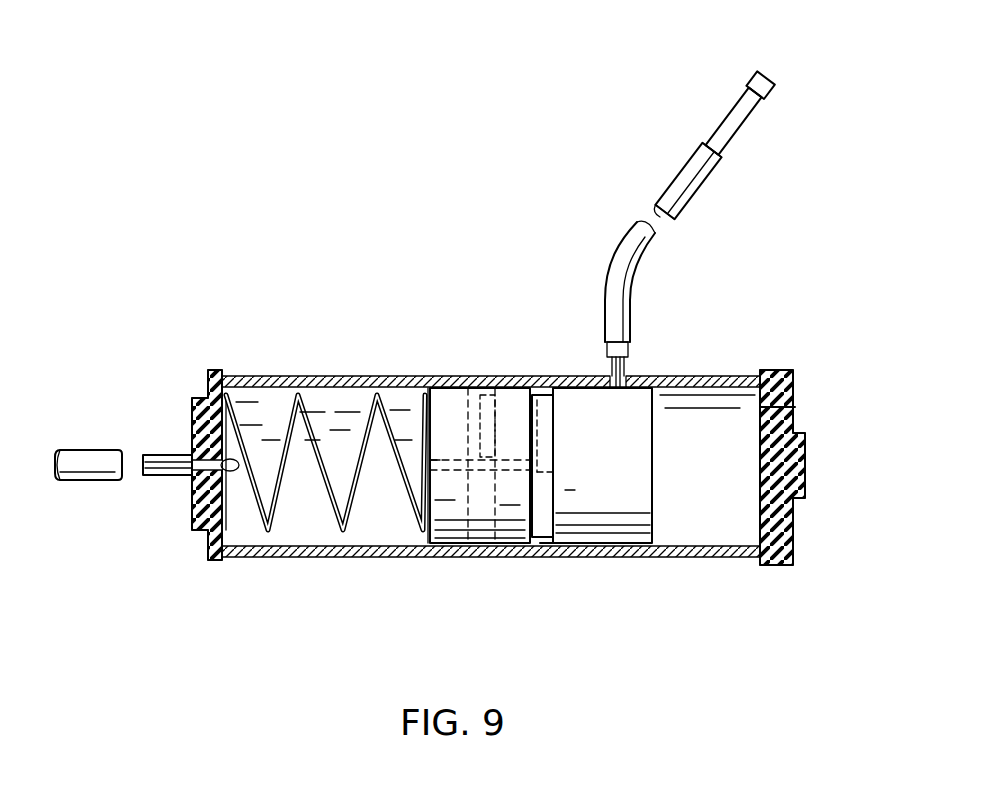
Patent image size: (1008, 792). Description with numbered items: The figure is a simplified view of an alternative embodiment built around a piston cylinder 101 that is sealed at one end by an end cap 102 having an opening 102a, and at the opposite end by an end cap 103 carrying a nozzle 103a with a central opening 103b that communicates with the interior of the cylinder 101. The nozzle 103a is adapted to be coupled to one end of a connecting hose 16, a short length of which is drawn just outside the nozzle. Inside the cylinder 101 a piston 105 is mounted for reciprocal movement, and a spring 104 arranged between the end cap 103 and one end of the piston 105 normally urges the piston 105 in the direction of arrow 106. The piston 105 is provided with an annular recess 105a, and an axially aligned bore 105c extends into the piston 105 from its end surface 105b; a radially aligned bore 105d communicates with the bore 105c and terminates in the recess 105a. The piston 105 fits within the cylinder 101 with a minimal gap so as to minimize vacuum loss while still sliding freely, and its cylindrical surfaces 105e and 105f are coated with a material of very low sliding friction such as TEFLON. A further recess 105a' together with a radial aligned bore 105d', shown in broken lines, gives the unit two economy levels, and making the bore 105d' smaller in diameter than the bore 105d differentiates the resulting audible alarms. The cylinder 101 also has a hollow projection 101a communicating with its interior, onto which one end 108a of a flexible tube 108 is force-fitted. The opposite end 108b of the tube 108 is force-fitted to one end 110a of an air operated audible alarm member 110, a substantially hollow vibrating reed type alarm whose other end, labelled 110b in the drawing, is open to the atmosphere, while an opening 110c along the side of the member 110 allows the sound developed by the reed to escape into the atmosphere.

The connecting hose 16 is at (97, 450).
The piston cylinder 101 is at (370, 548).
The hollow projection 101a is at (625, 372).
The end cap 102 is at (788, 370).
The opening 102a is at (796, 406).
The end cap 103 is at (210, 372).
The nozzle 103a is at (180, 456).
The central opening 103b is at (222, 470).
The spring 104 is at (312, 410).
The piston 105 is at (712, 447).
The annular recess 105a is at (586, 564).
The recess 105a' is at (497, 416).
The end surface 105b is at (430, 392).
The axially aligned bore 105c is at (455, 472).
The radially aligned bore 105d is at (585, 466).
The radial aligned bore 105d' is at (528, 395).
The cylindrical surface 105e is at (518, 514).
The cylindrical surface 105f is at (625, 495).
The arrow 106 is at (640, 448).
The flexible tube 108 is at (659, 178).
The end of tube 108a is at (632, 335).
The opposite end of tube 108b is at (712, 165).
The air operated audible alarm member 110 is at (724, 102).
The end of alarm member 110a is at (724, 152).
The connector head 110b is at (765, 70).
The opening 110c is at (756, 97).